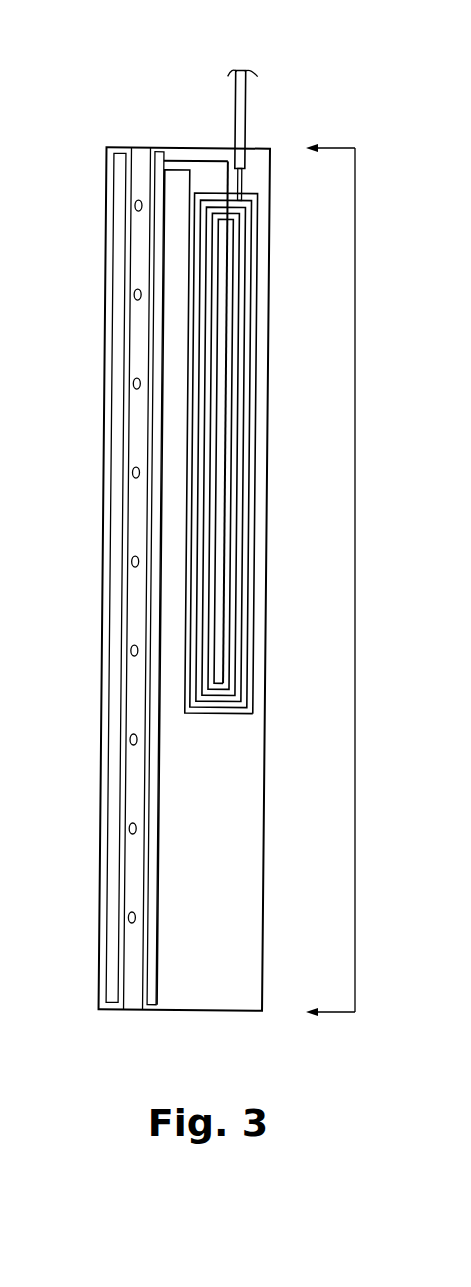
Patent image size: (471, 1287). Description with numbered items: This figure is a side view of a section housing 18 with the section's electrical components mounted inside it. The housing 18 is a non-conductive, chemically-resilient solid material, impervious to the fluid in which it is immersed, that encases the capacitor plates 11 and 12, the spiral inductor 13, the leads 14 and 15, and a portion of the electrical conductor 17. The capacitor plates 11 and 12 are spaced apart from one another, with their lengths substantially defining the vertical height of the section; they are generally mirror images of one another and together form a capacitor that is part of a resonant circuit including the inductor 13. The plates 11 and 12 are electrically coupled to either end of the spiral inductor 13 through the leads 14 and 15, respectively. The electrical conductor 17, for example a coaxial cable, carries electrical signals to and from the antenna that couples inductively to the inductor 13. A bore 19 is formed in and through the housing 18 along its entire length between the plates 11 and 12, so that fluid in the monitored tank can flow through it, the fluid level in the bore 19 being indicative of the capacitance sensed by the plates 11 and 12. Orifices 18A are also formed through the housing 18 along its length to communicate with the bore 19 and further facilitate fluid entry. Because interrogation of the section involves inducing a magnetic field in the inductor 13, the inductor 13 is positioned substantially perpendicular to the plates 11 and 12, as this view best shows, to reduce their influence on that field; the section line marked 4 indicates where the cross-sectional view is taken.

The capacitor plate 11 is at (118, 291).
The capacitor plate 12 is at (157, 448).
The spiral inductor 13 is at (227, 713).
The lead 14 is at (197, 157).
The lead 15 is at (177, 168).
The electrical conductor 17 is at (242, 103).
The housing 18 is at (223, 147).
The orifices 18A is at (131, 737).
The bore 19 is at (142, 155).
The section line 4- 4 is at (322, 580).